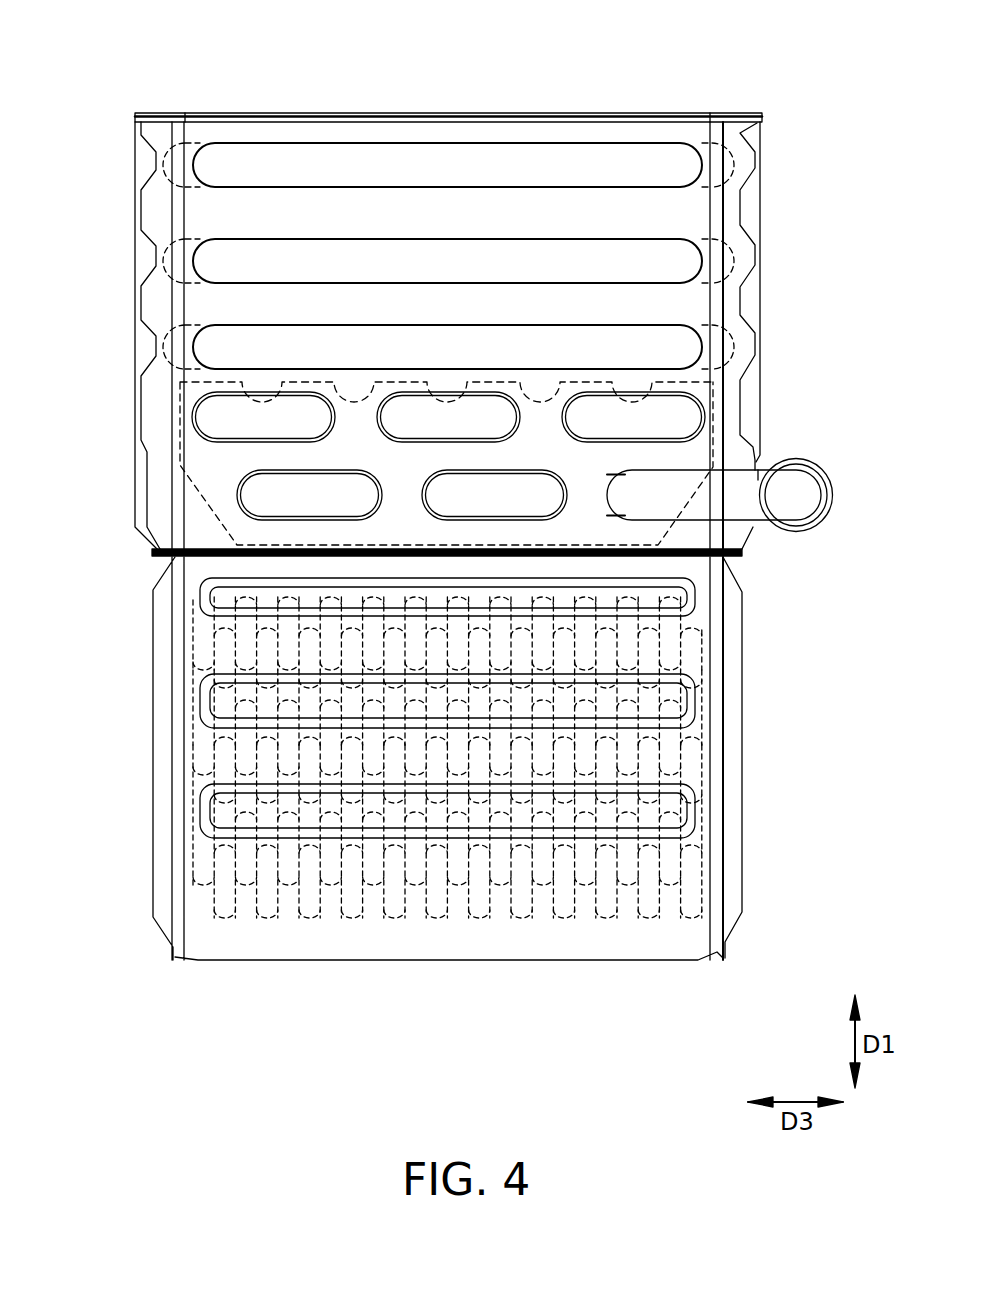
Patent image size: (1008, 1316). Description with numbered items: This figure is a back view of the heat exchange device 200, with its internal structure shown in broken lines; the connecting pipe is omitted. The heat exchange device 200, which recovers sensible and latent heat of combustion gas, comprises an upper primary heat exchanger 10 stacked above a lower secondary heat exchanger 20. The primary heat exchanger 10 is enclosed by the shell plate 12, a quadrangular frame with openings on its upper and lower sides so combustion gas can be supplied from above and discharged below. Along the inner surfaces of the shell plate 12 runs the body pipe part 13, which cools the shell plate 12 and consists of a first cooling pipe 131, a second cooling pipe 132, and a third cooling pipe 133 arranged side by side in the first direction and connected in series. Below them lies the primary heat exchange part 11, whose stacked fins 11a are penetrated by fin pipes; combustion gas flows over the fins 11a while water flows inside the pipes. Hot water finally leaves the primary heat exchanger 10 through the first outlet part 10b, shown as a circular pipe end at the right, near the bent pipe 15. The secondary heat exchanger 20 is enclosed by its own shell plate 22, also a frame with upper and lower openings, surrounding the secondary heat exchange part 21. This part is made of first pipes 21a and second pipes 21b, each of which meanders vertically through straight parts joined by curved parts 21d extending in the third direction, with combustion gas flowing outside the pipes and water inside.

The heat exchange device 200 is at (786, 56).
The primary heat exchanger 10 is at (198, 134).
The shell plate 12 is at (757, 212).
The body pipe part 13 is at (376, 256).
The first cooling pipe 131 is at (168, 168).
The second cooling pipe 132 is at (168, 262).
The third cooling pipe 133 is at (398, 347).
The primary heat exchange part 11 is at (190, 455).
The fins 11a is at (218, 472).
The first outlet part 10b is at (836, 495).
The bent pipe 15 is at (773, 508).
The secondary heat exchanger 20 is at (197, 575).
The secondary heat exchange part 21 is at (440, 757).
The first pipes 21a is at (212, 630).
The second pipes 21b is at (226, 660).
The curved parts 21d is at (680, 660).
The shell plate 22 is at (735, 912).